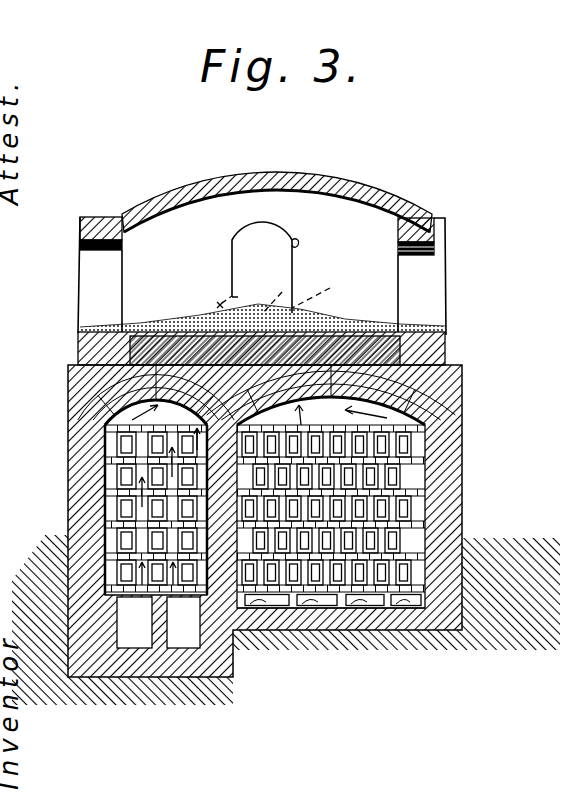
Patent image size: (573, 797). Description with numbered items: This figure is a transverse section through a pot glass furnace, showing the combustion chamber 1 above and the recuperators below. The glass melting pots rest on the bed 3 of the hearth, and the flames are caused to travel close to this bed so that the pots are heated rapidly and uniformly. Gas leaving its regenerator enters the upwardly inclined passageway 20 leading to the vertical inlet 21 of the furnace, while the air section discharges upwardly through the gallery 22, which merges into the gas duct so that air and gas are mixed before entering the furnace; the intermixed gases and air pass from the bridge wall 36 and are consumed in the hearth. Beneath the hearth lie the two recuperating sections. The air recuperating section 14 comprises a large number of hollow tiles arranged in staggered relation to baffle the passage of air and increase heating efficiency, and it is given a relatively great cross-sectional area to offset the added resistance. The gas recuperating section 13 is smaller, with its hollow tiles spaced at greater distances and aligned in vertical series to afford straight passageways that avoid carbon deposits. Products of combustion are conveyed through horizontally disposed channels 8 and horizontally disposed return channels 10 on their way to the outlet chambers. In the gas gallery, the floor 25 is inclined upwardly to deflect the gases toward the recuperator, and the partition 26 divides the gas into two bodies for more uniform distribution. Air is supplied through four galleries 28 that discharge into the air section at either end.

The combustion chamber 1 is at (262, 253).
The bed of the hearth 3 is at (329, 323).
The upwardly inclined passageway 20 is at (214, 304).
The vertical inlet 21 is at (298, 244).
The gallery 22 is at (307, 288).
The bridge wall 36 is at (262, 267).
The gas recuperating section 13 is at (115, 443).
The air recuperating section 14 is at (408, 426).
The horizontally disposed channels 8 is at (120, 500).
The horizontally disposed return channels 10 is at (120, 573).
The floor of the gallery 25 is at (177, 652).
The partition 26 is at (134, 622).
The galleries 28 is at (378, 606).